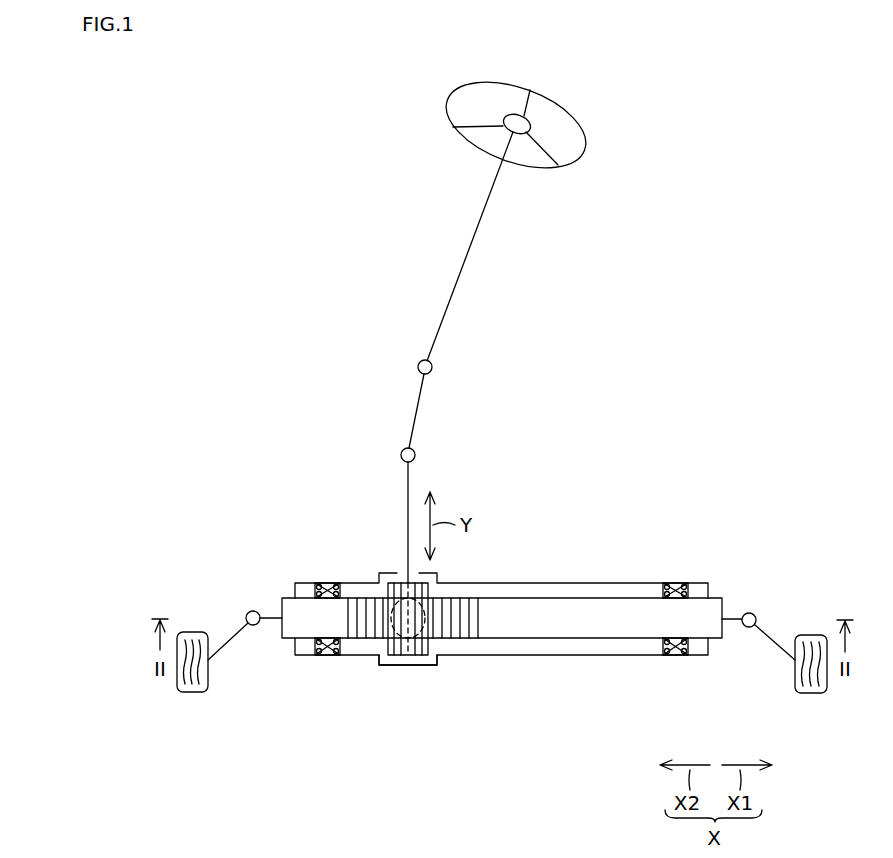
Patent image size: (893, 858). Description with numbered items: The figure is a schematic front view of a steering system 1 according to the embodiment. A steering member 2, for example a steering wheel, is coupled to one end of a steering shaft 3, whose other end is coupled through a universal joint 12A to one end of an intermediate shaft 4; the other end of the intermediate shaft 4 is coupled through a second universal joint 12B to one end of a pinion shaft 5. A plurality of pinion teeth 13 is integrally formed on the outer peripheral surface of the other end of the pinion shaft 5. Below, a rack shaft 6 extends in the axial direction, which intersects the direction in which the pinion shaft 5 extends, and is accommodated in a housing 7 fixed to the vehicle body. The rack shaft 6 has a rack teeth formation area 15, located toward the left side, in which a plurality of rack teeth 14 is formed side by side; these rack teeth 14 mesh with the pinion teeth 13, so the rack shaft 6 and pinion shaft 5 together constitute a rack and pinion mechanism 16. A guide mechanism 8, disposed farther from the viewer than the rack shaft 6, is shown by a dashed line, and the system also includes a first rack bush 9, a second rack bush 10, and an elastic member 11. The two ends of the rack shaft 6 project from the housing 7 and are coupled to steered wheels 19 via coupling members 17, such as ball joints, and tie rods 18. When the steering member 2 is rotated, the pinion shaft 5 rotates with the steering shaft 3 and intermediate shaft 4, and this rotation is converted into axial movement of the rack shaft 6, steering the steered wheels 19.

The steering system 1 is at (316, 180).
The steering member 2 is at (478, 84).
The steering shaft 3 is at (458, 271).
The intermediate shaft 4 is at (415, 411).
The pinion shaft 5 is at (407, 509).
The rack shaft 6 is at (537, 615).
The housing 7 is at (600, 583).
The guide mechanism 8 is at (430, 591).
The first rack bush 9 is at (680, 583).
The second rack bush 10 is at (327, 656).
The elastic member 11 is at (334, 568).
The universal joint 12A is at (418, 364).
The universal joint 12B is at (400, 453).
The pinion teeth 13 is at (411, 640).
The rack teeth 14 is at (460, 628).
The rack teeth formation area 15 is at (367, 651).
The rack and pinion mechanism 16 is at (439, 677).
The coupling members 17 is at (255, 609).
The tie rods 18 is at (232, 645).
The steered wheels 19 is at (192, 693).